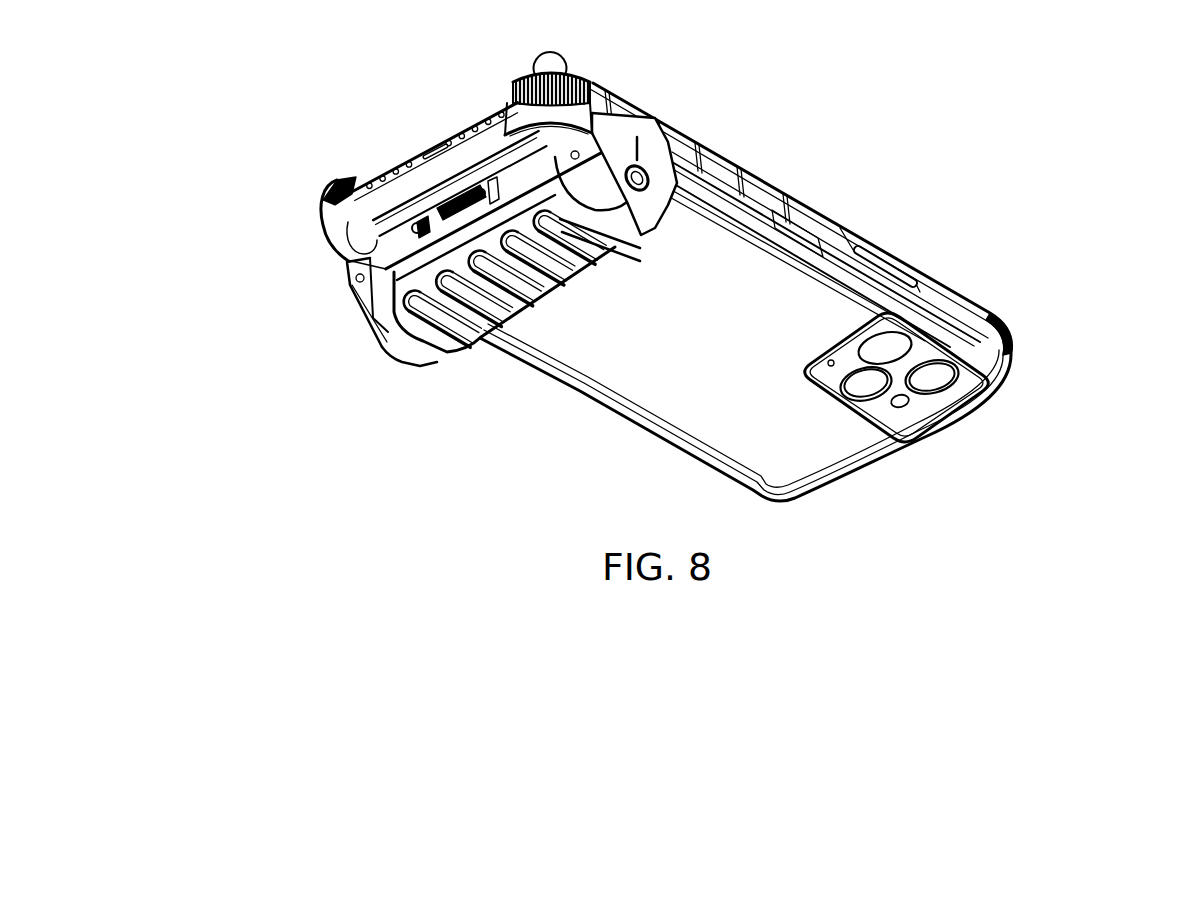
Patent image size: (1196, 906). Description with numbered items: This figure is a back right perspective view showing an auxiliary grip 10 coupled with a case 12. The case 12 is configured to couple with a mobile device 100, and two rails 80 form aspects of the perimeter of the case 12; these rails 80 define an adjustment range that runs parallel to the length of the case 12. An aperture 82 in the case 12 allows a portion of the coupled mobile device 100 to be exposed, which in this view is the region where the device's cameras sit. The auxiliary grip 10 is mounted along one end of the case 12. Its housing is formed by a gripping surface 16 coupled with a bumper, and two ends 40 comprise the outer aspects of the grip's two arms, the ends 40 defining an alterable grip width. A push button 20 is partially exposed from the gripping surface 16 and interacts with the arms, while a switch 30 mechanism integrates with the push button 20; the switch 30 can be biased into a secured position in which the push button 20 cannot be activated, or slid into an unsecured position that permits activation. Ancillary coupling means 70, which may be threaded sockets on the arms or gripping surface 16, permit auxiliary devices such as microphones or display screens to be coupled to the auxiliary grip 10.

The auxiliary grip 10 is at (348, 344).
The case 12 is at (920, 263).
The gripping surface 16 is at (487, 338).
The push button 20 is at (407, 240).
The switch 30 is at (462, 197).
The ends 40 is at (615, 140).
The ancillary coupling means 70 is at (650, 175).
The rails 80 is at (823, 240).
The aperture 82 is at (933, 363).
The mobile device 100 is at (870, 388).